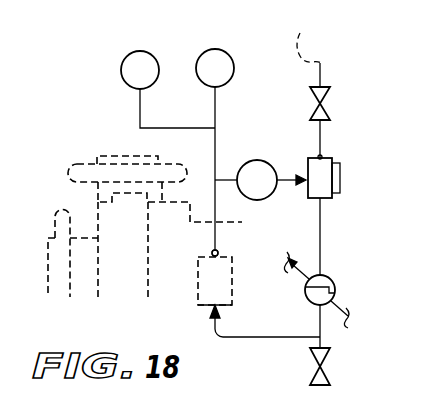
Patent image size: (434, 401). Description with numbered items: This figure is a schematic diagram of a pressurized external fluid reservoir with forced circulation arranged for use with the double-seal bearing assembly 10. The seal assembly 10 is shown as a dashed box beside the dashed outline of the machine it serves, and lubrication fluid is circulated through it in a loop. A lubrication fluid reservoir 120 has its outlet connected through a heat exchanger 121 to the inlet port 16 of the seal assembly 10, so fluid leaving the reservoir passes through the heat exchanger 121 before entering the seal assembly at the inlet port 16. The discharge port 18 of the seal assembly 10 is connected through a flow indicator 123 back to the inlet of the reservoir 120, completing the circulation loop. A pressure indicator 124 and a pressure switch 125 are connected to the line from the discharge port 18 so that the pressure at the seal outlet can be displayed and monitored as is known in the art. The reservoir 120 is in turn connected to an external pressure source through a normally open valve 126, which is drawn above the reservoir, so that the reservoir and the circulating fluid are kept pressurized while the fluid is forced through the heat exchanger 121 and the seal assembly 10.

The double-seal bearing assembly 10 is at (197, 280).
The inlet port 16 is at (224, 311).
The discharge port 18 is at (220, 254).
The lubrication fluid reservoir 120 is at (325, 156).
The heat exchanger 121 is at (330, 277).
The flow indicator 123 is at (277, 143).
The pressure indicator 124 is at (238, 37).
The pressure switch 125 is at (163, 38).
The normally open valve 126 is at (330, 97).